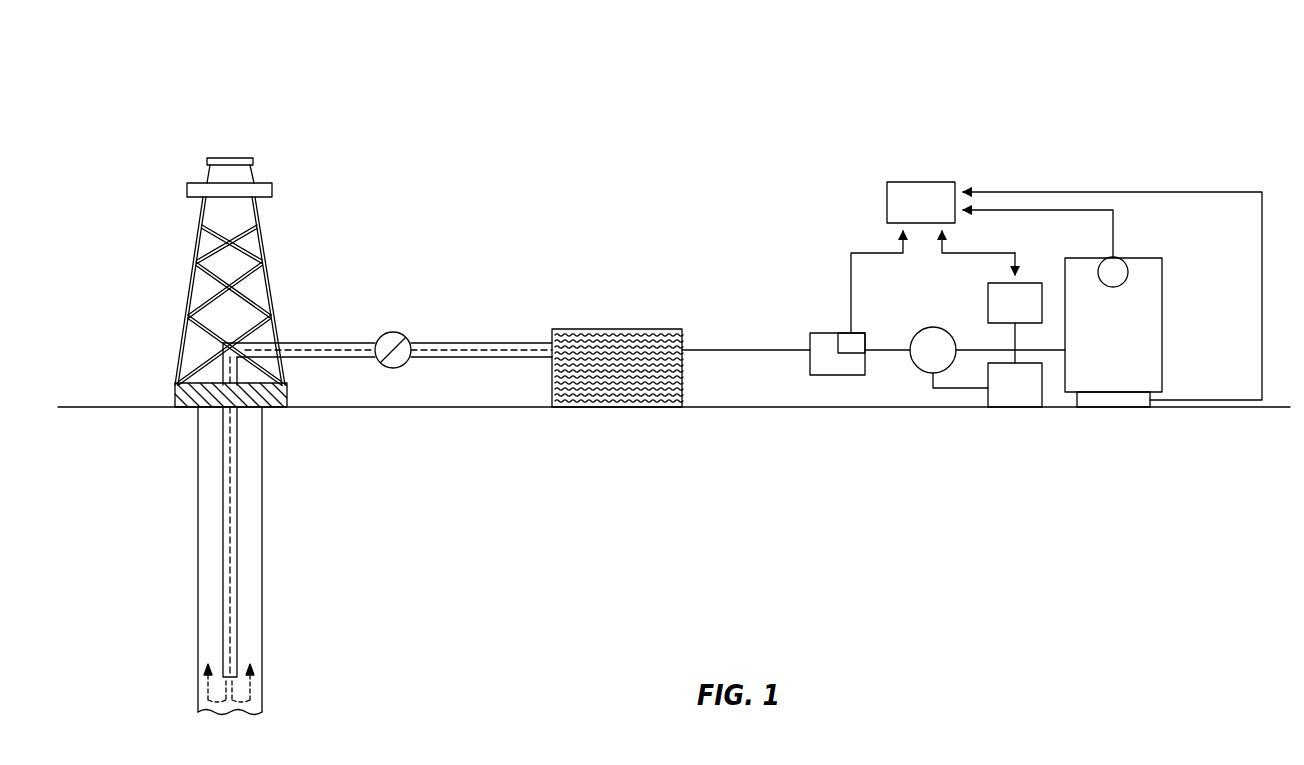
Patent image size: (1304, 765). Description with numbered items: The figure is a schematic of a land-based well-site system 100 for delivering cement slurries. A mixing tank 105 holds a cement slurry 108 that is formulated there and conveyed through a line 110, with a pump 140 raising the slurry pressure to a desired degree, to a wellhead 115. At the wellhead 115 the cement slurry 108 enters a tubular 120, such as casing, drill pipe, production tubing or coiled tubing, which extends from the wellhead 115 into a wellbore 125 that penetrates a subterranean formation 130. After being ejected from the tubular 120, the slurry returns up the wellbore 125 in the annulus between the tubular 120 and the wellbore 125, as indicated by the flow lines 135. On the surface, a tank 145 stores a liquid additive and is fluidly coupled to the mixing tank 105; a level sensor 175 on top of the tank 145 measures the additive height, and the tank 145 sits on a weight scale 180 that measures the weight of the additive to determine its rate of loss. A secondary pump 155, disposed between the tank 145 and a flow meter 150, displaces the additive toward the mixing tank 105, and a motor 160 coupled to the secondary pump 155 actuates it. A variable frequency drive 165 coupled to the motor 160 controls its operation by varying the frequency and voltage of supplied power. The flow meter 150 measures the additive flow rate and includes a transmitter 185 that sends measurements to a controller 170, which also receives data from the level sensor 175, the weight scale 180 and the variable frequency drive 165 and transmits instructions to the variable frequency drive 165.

The system 100 is at (142, 72).
The mixing tank 105 is at (683, 332).
The cement slurry 108 is at (583, 338).
The line 110 is at (335, 343).
The wellhead 115 is at (172, 395).
The tubular 120 is at (237, 482).
The wellbore 125 is at (263, 567).
The subterranean formation 130 is at (102, 567).
The flow lines 135 is at (207, 690).
The pump 140 is at (395, 332).
The tank 145 is at (1162, 325).
The flow meter 150 is at (808, 362).
The secondary pump 155 is at (933, 327).
The motor 160 is at (1023, 395).
The variable frequency drive 165 is at (988, 293).
The controller 170 is at (913, 182).
The level sensor 175 is at (1118, 270).
The weight scale 180 is at (1115, 400).
The transmitter 185 is at (848, 333).